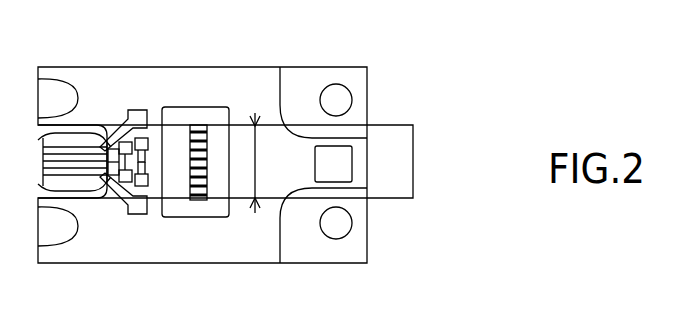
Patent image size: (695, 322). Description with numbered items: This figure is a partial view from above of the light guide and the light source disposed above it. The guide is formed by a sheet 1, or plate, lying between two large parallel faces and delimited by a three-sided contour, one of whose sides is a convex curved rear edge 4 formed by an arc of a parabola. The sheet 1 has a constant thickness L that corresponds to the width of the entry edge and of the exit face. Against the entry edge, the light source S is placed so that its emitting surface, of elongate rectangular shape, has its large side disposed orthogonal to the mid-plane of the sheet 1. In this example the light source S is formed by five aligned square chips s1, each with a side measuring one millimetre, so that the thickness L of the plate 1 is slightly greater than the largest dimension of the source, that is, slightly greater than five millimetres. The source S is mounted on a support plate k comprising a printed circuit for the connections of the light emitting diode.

The sheet 1 is at (403, 161).
The convex curved rear edge 4 is at (390, 190).
The support plate k is at (140, 243).
The square chips s1 is at (200, 200).
The light source S is at (205, 162).
The thickness L is at (258, 166).